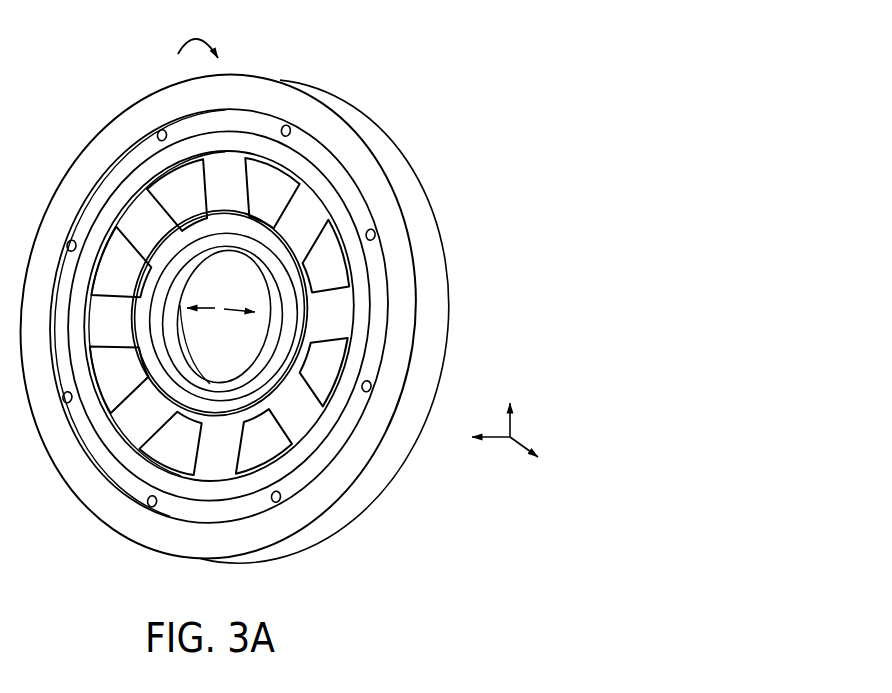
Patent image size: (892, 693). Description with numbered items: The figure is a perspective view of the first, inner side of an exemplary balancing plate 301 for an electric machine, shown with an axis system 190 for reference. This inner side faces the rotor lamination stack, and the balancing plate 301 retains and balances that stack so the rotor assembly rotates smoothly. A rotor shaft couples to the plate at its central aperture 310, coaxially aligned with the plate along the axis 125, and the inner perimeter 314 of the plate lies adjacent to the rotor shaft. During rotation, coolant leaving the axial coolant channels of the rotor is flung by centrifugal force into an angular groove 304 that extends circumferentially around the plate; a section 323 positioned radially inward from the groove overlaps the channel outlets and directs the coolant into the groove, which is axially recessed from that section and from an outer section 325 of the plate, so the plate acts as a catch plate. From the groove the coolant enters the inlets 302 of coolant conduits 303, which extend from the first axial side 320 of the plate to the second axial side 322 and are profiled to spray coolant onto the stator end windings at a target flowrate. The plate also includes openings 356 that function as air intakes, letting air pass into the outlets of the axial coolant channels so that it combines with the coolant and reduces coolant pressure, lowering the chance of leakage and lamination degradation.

The balancing plate 301 is at (556, 128).
The inlets 302 is at (330, 125).
The coolant conduits 303 is at (279, 122).
The groove 304 is at (328, 198).
The central aperture 310 is at (257, 321).
The inner perimeter 314 is at (178, 355).
The first axial side 320 is at (272, 94).
The second axial side 322 is at (190, 57).
The section 323 is at (325, 247).
The outer section 325 is at (328, 167).
The openings 356 is at (340, 212).
The axis 125 is at (233, 307).
The axis system 190 is at (532, 428).